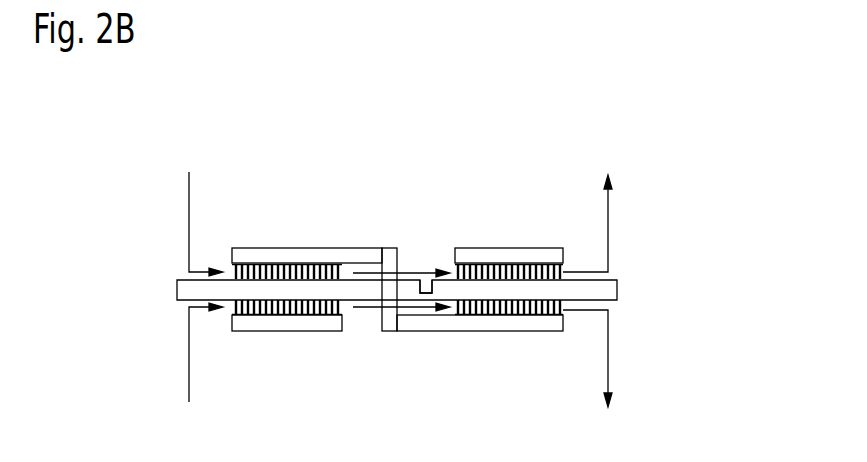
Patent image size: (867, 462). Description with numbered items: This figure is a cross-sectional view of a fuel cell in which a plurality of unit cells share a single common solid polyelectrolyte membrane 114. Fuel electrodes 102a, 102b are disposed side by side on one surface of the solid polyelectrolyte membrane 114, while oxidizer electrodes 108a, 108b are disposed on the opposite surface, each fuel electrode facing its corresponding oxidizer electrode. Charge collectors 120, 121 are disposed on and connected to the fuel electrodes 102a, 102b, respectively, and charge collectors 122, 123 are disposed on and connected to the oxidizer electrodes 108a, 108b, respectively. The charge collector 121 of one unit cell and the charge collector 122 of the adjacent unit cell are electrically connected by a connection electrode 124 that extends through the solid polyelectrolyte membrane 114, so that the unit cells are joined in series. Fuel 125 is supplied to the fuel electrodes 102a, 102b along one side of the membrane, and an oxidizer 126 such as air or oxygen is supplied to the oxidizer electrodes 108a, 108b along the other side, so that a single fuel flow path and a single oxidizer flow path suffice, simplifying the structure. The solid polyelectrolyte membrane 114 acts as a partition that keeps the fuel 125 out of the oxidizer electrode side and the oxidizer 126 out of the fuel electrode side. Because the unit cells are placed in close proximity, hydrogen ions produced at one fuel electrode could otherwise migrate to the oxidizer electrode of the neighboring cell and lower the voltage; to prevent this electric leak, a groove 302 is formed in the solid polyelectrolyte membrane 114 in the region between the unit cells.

The fuel electrode 102a is at (292, 291).
The fuel electrode 102b is at (491, 293).
The oxidizer electrode 108a is at (253, 314).
The oxidizer electrode 108b is at (475, 315).
The solid polyelectrolyte membrane 114 is at (603, 292).
The charge collector 120 is at (287, 262).
The charge collector 121 is at (508, 262).
The charge collector 122 is at (288, 327).
The charge collector 123 is at (508, 325).
The connection electrode 124 is at (394, 262).
The fuel 125 is at (195, 207).
The oxidizer 126 is at (195, 373).
The groove 302 is at (428, 290).